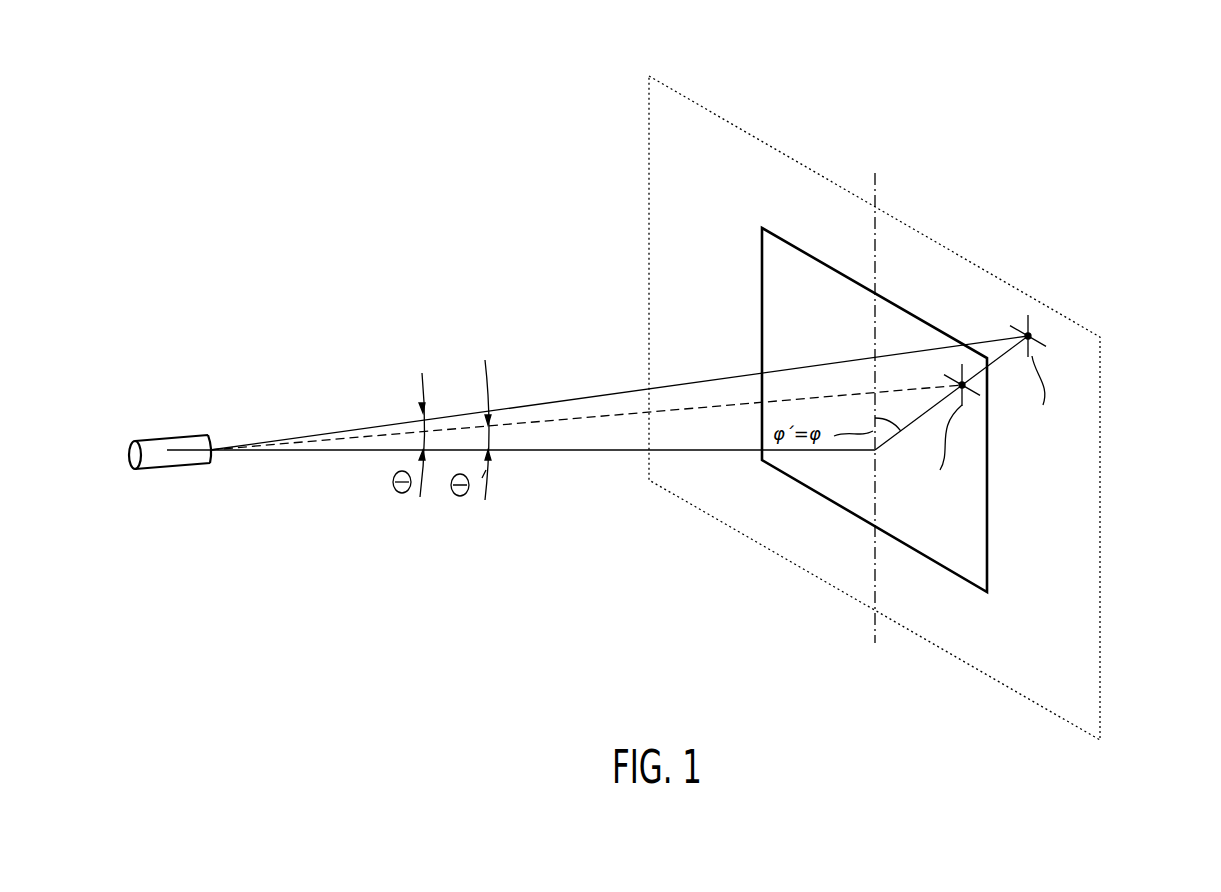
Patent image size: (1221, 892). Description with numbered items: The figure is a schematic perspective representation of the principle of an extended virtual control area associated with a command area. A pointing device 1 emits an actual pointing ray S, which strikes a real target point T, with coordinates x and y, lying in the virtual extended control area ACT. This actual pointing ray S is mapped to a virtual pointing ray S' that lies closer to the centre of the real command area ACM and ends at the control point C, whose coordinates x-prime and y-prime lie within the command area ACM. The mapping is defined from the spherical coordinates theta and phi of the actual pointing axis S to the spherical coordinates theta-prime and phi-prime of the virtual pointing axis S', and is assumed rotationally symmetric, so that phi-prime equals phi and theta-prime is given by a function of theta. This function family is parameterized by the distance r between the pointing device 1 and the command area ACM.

The pointing device 1 is at (183, 448).
The distance r is at (560, 452).
The actual pointing ray S is at (619, 379).
The virtual pointing ray S' is at (586, 441).
The target point T is at (1033, 332).
The control point C is at (964, 382).
The command area ACM is at (973, 565).
The virtual extended control area ACT is at (1085, 685).